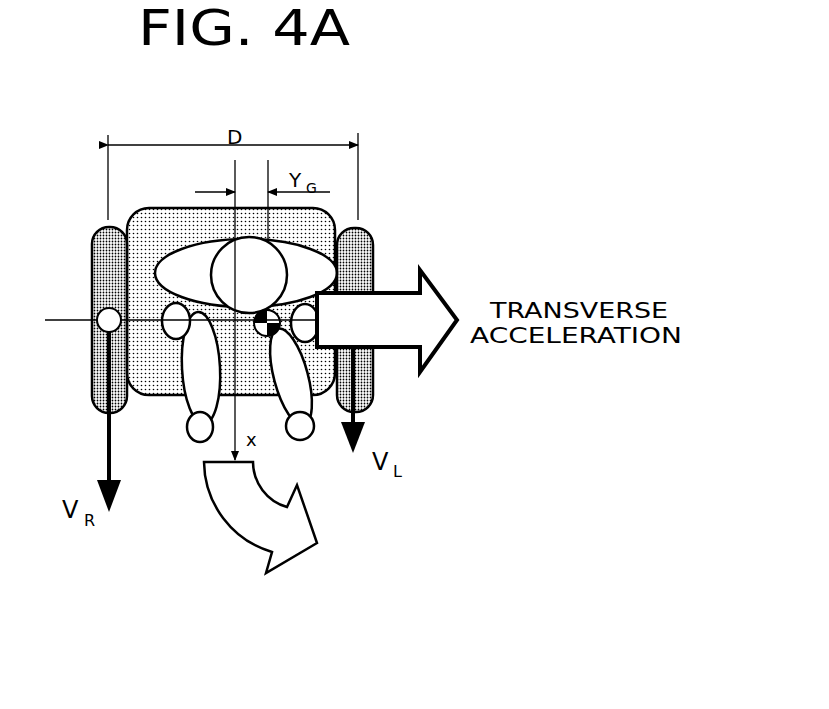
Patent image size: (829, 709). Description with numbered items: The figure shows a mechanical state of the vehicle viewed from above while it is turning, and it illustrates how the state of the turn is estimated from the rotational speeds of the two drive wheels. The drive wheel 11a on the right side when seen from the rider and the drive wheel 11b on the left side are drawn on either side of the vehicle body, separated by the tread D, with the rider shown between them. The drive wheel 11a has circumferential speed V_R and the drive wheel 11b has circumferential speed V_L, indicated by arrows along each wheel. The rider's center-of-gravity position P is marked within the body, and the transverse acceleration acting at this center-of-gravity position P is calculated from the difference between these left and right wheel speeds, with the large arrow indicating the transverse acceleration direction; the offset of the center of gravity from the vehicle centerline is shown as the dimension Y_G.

The drive wheel 11a is at (92, 243).
The drive wheel 11b is at (373, 245).
The center-of-gravity position P is at (316, 425).